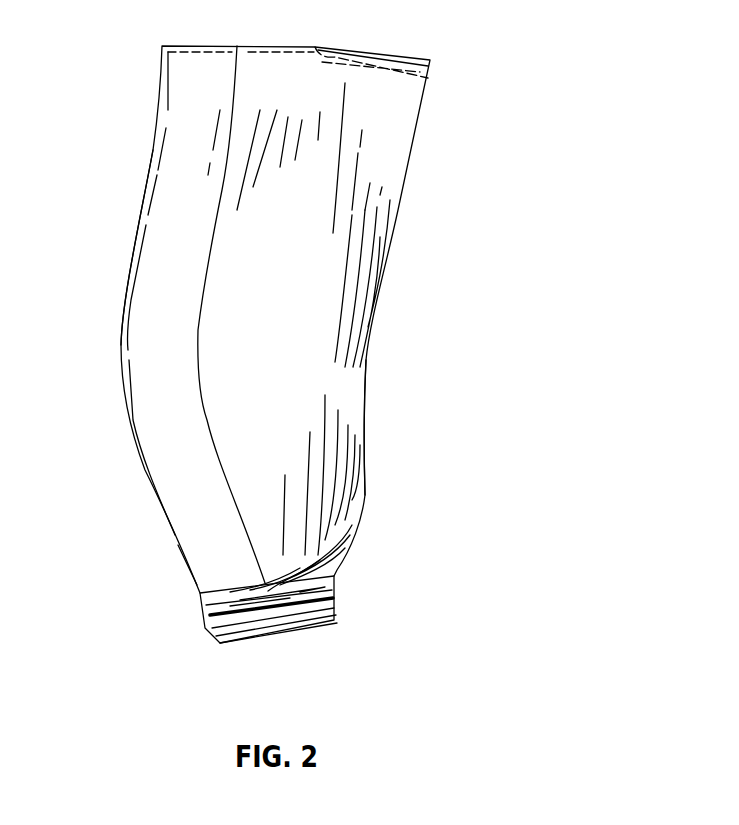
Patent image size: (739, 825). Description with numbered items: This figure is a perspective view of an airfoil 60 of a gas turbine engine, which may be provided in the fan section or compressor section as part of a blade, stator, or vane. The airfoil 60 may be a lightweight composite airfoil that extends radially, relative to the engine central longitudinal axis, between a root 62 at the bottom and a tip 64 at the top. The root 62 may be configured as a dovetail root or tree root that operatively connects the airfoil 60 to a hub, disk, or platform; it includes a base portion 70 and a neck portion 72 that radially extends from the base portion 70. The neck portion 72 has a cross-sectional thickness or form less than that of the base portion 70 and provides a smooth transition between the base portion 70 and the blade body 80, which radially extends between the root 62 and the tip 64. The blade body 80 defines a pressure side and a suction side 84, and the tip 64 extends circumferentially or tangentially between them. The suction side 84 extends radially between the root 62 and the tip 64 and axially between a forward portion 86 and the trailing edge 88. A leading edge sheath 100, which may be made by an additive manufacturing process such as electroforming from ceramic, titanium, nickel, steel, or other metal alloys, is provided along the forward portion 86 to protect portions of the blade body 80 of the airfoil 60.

The airfoil 60 is at (95, 518).
The root 62 is at (348, 605).
The tip 64 is at (395, 58).
The base portion 70 is at (316, 618).
The neck portion 72 is at (338, 578).
The blade body 80 is at (404, 248).
The suction side 84 is at (303, 475).
The forward portion 86 is at (160, 78).
The trailing edge 88 is at (368, 390).
The leading edge sheath 100 is at (112, 346).